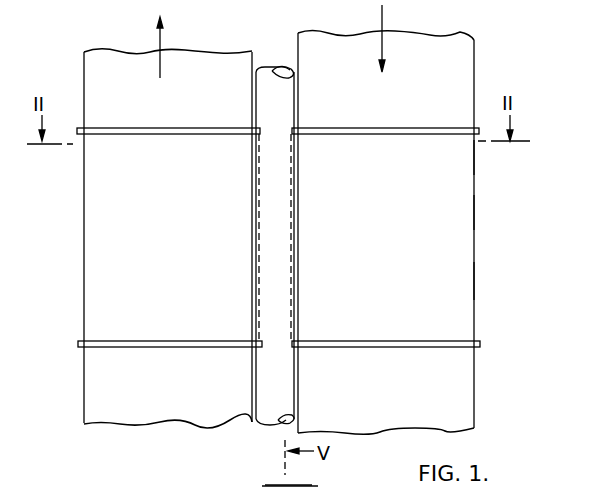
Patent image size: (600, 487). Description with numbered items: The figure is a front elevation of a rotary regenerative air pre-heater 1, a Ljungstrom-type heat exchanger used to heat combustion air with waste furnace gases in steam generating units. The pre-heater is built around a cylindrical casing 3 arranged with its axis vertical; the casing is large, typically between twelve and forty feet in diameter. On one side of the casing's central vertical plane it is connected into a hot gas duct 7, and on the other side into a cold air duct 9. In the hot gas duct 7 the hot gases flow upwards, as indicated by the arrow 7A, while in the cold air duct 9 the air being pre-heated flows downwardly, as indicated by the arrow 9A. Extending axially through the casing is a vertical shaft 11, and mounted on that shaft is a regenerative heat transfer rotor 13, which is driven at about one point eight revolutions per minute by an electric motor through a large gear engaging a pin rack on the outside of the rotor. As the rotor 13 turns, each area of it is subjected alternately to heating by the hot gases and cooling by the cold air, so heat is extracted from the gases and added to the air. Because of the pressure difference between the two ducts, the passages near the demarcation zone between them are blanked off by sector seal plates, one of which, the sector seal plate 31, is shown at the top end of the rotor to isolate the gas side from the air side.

The rotary regenerative air pre-heater 1 is at (467, 213).
The cylindrical casing 3 is at (468, 157).
The hot gas duct 7 is at (85, 102).
The arrow 7A is at (161, 35).
The cold air duct 9 is at (467, 82).
The arrow 9A is at (383, 17).
The vertical shaft 11 is at (290, 387).
The regenerative heat transfer rotor 13 is at (467, 280).
The sector seal plate 31 is at (326, 474).